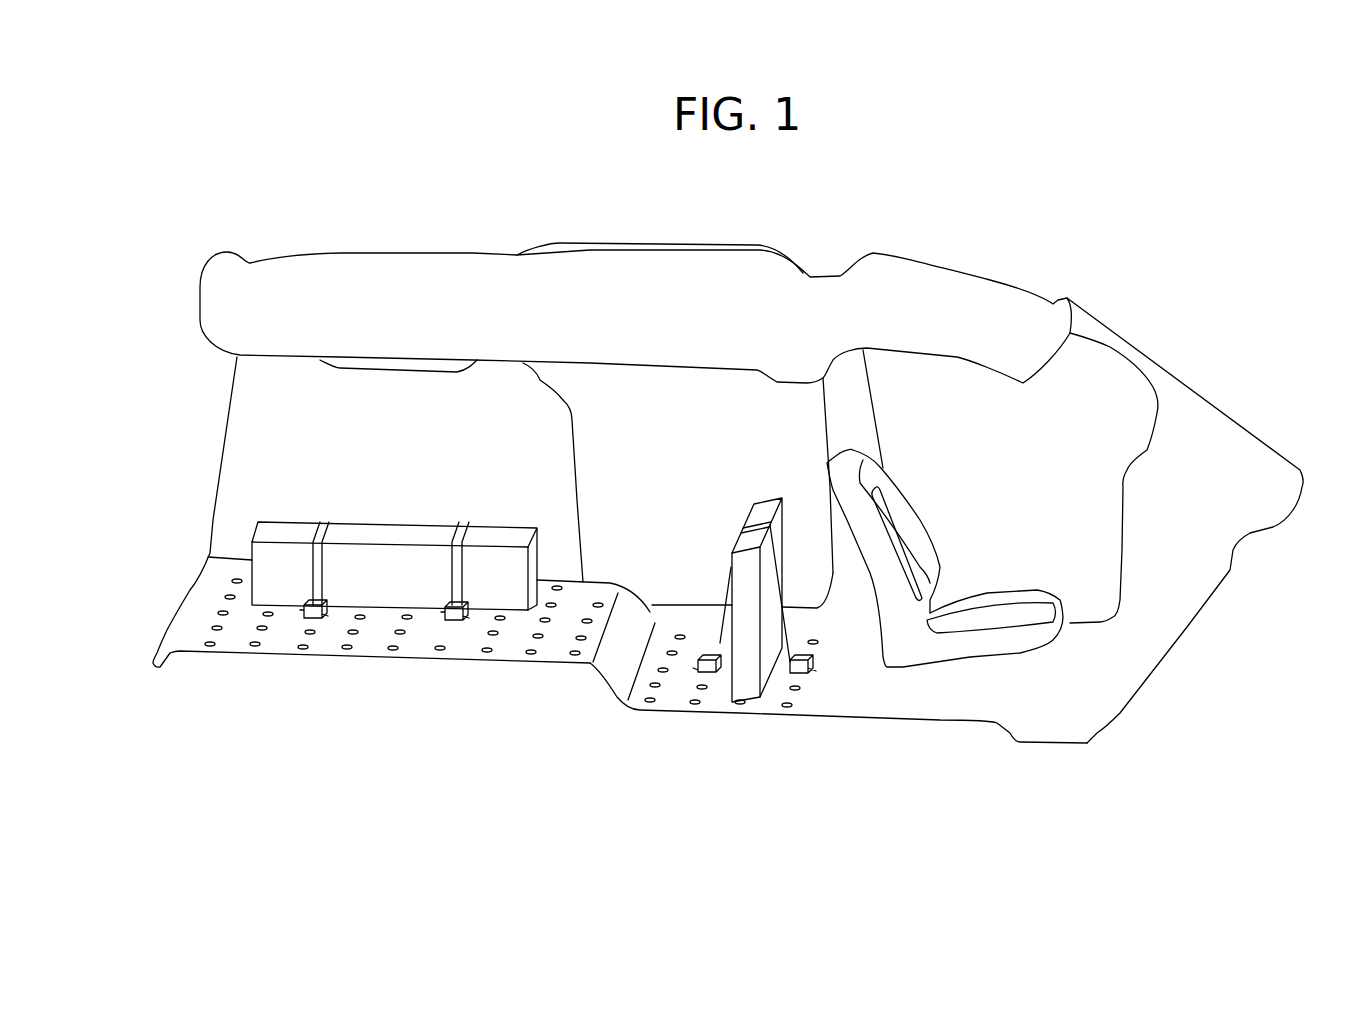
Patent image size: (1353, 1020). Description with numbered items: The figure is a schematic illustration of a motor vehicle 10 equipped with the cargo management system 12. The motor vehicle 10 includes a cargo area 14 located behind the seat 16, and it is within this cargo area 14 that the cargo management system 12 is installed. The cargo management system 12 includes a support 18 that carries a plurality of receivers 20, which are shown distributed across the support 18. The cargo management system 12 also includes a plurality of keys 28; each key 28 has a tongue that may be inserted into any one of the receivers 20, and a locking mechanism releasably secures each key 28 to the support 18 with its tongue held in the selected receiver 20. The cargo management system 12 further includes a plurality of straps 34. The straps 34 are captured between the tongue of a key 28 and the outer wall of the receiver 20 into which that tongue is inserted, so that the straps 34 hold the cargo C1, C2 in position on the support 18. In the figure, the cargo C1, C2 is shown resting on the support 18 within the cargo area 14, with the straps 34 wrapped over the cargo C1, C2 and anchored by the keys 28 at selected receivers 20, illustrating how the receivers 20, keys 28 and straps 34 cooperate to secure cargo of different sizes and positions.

The motor vehicle 10 is at (1158, 297).
The cargo management system 12 is at (229, 418).
The cargo area 14 is at (668, 515).
The seat 16 is at (902, 514).
The support 18 is at (198, 600).
The receivers 20 is at (680, 636).
The keys 28 is at (440, 622).
The straps 34 is at (304, 522).
The cargo C1 is at (762, 498).
The cargo C2 is at (396, 522).